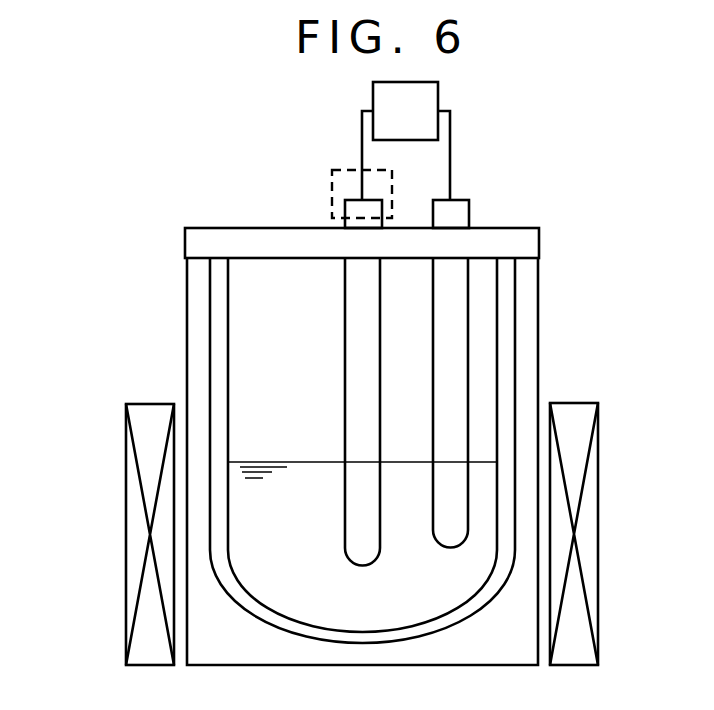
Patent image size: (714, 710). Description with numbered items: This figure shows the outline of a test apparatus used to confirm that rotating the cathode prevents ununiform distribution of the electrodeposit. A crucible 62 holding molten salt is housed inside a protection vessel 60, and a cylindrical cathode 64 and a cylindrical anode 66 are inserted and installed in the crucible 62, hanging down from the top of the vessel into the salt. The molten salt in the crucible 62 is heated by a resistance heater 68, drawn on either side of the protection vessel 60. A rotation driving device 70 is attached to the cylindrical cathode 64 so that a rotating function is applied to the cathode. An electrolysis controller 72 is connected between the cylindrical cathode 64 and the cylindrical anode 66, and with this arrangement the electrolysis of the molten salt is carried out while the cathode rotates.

The protection vessel 60 is at (530, 312).
The crucible 62 is at (220, 335).
The cylindrical cathode 64 is at (362, 328).
The cylindrical anode 66 is at (447, 405).
The resistance heater 68 is at (130, 470).
The rotation driving device 70 is at (347, 175).
The electrolysis controller 72 is at (432, 92).